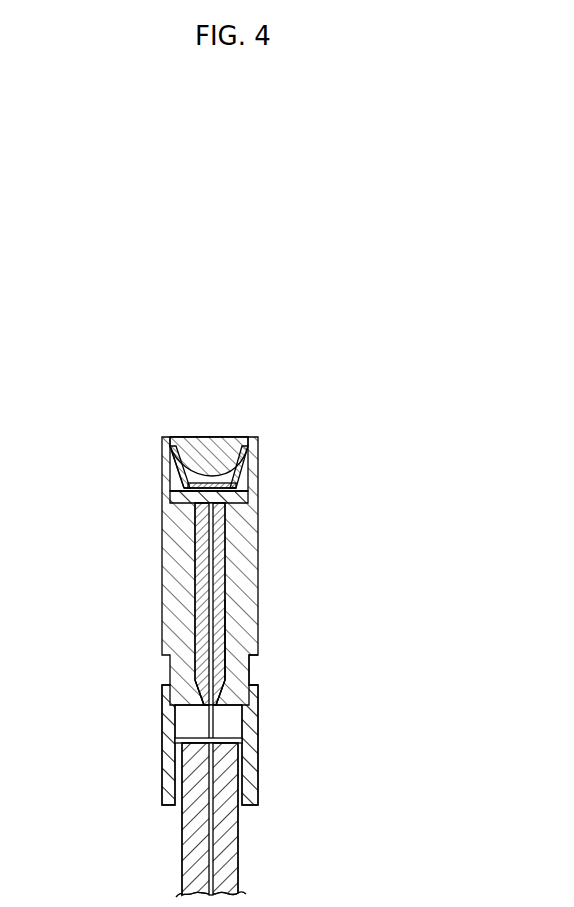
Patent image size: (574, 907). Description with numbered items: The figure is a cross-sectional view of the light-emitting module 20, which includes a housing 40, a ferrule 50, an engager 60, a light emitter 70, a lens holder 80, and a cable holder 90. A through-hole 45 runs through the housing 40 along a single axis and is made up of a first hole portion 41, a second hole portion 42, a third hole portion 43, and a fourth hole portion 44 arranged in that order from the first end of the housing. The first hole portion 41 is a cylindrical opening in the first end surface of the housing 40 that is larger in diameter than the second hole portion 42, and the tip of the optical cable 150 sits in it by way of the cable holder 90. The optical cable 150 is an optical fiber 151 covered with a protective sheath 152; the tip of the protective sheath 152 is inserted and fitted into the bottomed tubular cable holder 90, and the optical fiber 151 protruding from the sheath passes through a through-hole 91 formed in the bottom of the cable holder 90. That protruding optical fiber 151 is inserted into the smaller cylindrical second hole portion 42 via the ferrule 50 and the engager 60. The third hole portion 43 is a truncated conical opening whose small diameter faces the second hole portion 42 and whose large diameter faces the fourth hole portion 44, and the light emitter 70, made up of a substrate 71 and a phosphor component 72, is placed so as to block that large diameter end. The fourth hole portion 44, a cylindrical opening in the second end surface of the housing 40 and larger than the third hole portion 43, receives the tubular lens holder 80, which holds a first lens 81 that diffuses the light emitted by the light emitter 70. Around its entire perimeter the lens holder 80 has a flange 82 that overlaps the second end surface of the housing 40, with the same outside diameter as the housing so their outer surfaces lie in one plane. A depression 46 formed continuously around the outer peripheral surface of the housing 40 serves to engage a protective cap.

The light-emitting module 20 is at (238, 390).
The housing 40 is at (164, 632).
The first hole portion 41 is at (222, 700).
The second hole portion 42 is at (214, 635).
The third hole portion 43 is at (248, 505).
The fourth hole portion 44 is at (185, 479).
The through-hole 45 is at (241, 622).
The depression 46 is at (252, 670).
The ferrule 50 is at (194, 540).
The engager 60 is at (204, 667).
The light emitter 70 is at (172, 470).
The substrate 71 is at (242, 492).
The phosphor component 72 is at (240, 486).
The lens holder 80 is at (204, 460).
The first lens 81 is at (233, 438).
The flange 82 is at (252, 456).
The cable holder 90 is at (164, 777).
The through-hole 91 is at (224, 742).
The optical cable 150 is at (251, 882).
The optical fiber 151 is at (215, 717).
The protective sheath 152 is at (181, 846).